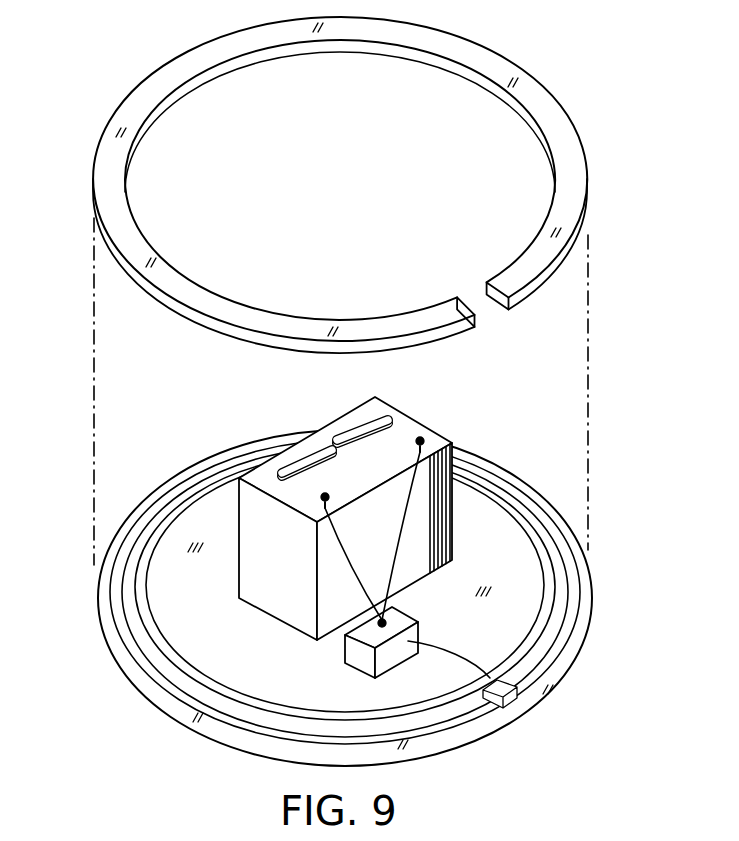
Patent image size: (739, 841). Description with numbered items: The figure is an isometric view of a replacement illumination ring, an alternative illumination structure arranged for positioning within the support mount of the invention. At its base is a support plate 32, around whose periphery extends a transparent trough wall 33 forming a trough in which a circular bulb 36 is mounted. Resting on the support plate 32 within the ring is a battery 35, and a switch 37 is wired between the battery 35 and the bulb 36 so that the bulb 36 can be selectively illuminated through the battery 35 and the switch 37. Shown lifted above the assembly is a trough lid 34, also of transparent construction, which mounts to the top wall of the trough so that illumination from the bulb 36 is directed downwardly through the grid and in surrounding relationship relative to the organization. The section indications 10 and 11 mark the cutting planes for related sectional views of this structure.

The section line 10- 10 is at (38, 690).
The section line 11- 11 is at (197, 202).
The support plate 32 is at (508, 628).
The peripheral transparent trough wall 33 is at (552, 657).
The trough lid 34 is at (563, 146).
The battery 35 is at (453, 443).
The circular bulb 36 is at (558, 548).
The switch 37 is at (428, 588).